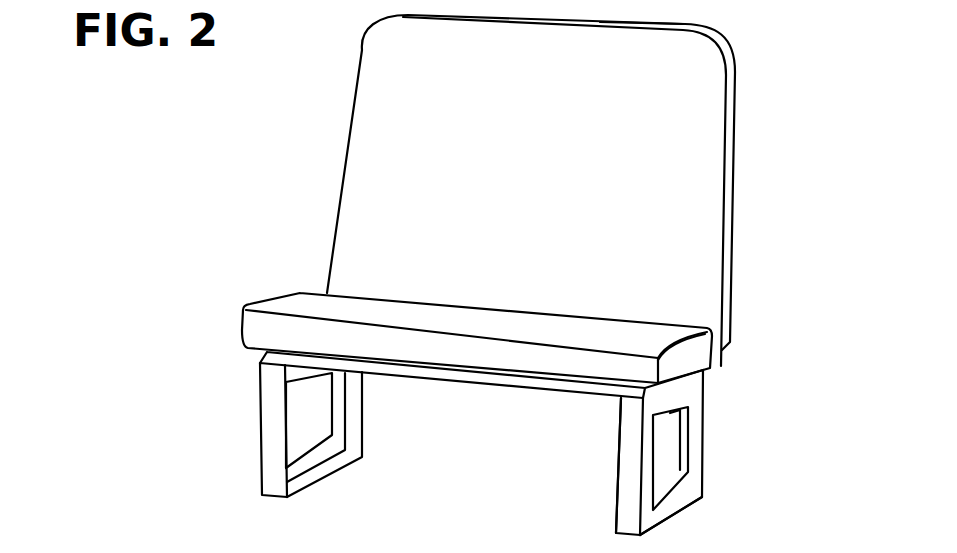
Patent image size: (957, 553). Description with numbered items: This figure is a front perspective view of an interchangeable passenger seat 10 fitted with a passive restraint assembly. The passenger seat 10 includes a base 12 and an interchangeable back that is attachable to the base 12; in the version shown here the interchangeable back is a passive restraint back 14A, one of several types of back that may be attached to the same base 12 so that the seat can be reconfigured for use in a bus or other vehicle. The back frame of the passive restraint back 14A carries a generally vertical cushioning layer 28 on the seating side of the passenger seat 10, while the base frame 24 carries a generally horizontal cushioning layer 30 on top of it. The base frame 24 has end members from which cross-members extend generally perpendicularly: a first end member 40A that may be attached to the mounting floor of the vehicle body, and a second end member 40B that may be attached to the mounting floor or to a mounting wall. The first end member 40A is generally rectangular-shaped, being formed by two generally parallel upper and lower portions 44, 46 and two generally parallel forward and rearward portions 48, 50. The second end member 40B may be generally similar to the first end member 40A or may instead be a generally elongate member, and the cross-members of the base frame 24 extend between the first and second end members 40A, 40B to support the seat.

The interchangeable passenger seat 10 is at (238, 140).
The base 12 is at (248, 303).
The passive restraint back 14A is at (733, 171).
The base frame 24 is at (363, 422).
The generally vertical cushioning layer 28 is at (677, 113).
The generally horizontal cushioning layer 30 is at (657, 372).
The first end member 40A is at (262, 438).
The second end member 40B is at (705, 445).
The upper portion 44 is at (680, 415).
The lower portion 46 is at (675, 513).
The forward portion 48 is at (617, 440).
The rearward portion 50 is at (695, 423).